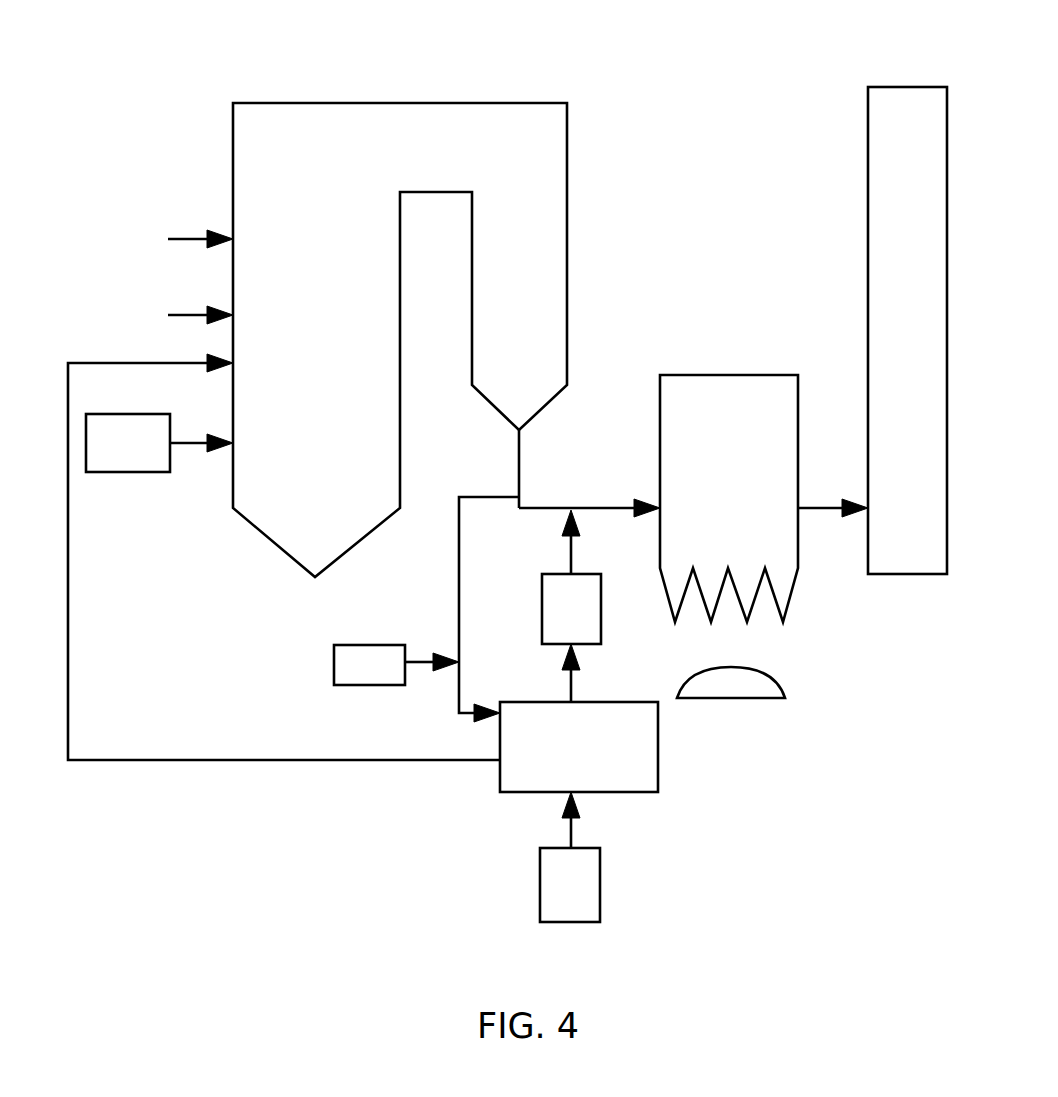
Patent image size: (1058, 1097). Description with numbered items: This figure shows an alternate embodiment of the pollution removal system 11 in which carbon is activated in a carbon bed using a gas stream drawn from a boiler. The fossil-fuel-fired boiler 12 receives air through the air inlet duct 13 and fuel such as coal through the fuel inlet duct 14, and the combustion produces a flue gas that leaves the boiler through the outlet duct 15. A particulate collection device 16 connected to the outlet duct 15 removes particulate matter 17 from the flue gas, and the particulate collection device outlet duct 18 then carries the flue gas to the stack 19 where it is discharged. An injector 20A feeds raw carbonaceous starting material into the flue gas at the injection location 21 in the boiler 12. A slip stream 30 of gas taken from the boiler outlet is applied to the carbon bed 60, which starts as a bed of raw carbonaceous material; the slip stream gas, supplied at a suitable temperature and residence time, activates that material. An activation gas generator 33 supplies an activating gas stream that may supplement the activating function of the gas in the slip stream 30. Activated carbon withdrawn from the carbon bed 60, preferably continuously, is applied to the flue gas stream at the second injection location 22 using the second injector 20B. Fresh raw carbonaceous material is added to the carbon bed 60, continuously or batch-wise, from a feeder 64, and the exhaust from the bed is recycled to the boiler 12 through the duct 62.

The pollution removal system 11 is at (700, 191).
The fossil-fuel-fired boiler 12 is at (340, 558).
The air inlet duct 13 is at (188, 239).
The fuel inlet duct 14 is at (188, 315).
The outlet duct 15 is at (519, 437).
The particulate collection device 16 is at (685, 375).
The particulate matter 17 is at (755, 668).
The particulate collection device outlet duct 18 is at (815, 503).
The stack 19 is at (887, 87).
The injector 20A is at (120, 472).
The second injector 20B is at (601, 596).
The injection location 21 is at (233, 443).
The second injection location 22 is at (570, 508).
The slip stream 30 is at (459, 572).
The activation gas generator 33 is at (350, 685).
The carbon bed 60 is at (658, 762).
The duct 62 is at (220, 760).
The feeder 64 is at (600, 873).